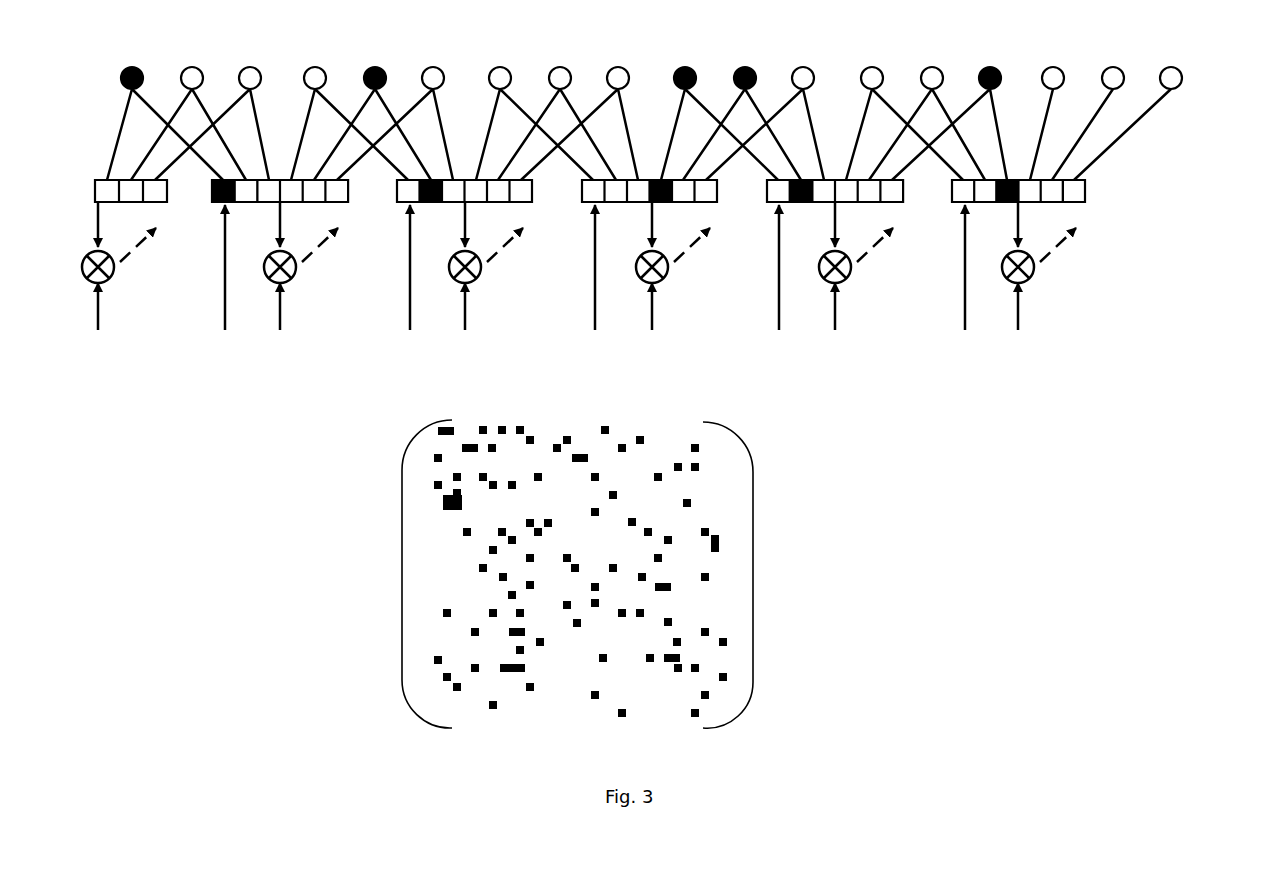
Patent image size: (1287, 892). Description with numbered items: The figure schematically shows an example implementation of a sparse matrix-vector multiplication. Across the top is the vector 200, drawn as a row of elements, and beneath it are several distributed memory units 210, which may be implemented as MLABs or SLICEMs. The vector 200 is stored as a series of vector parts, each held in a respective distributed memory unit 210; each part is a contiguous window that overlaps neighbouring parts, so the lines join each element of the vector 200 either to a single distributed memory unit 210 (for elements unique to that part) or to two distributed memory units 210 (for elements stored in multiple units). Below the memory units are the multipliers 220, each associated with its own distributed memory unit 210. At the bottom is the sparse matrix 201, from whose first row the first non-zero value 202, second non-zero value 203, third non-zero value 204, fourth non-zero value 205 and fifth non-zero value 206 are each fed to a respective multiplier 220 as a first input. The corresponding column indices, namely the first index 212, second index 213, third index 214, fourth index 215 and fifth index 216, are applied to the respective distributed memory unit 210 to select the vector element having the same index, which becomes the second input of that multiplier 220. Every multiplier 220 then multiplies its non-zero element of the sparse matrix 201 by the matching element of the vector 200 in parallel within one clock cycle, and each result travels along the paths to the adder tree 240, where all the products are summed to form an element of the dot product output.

The vector 200 is at (689, 121).
The distributed memory units 210 is at (626, 187).
The multipliers 220 is at (620, 266).
The adder tree 240 is at (631, 238).
The sparse matrix 201 is at (753, 515).
The first non-zero value 202 is at (435, 422).
The second non-zero value 203 is at (483, 428).
The third non-zero value 204 is at (500, 430).
The fourth non-zero value 205 is at (520, 428).
The fifth non-zero value 206 is at (612, 428).
The first index 212 is at (224, 282).
The second index 213 is at (406, 282).
The third index 214 is at (589, 282).
The fourth index 215 is at (775, 282).
The fifth index 216 is at (961, 282).